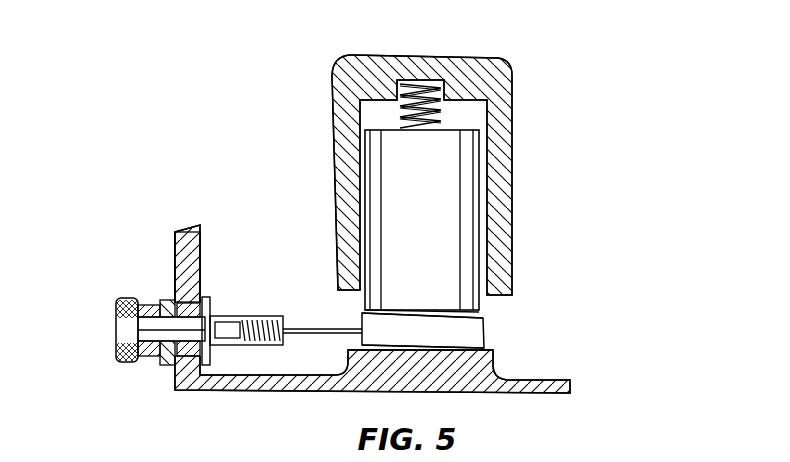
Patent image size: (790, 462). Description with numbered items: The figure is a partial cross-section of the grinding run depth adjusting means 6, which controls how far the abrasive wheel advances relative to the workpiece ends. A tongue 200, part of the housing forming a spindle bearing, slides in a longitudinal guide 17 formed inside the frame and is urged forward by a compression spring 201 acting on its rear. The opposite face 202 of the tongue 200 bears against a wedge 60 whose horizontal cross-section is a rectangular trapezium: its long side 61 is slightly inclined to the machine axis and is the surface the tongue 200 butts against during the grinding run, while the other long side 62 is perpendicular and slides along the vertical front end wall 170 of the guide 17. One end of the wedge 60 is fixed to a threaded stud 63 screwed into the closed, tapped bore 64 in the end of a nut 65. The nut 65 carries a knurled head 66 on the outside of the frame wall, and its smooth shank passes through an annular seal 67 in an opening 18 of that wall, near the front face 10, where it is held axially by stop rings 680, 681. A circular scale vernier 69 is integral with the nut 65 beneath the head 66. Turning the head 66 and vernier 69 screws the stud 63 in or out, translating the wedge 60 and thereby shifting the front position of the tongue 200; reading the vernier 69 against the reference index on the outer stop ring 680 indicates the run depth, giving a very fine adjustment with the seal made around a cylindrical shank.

The grinding run depth adjusting means 6 is at (246, 252).
The front face 10 is at (572, 387).
The longitudinal guide 17 is at (514, 183).
The opening 18 is at (177, 365).
The wedge 60 is at (460, 330).
The long side 61 is at (484, 317).
The other long side 62 is at (484, 348).
The threaded stud 63 is at (332, 337).
The tapped bore 64 is at (235, 332).
The nut 65 is at (150, 330).
The knurled head 66 is at (120, 322).
The annular seal 67 is at (200, 297).
The circular scale vernier 69 is at (150, 302).
The vertical front end wall 170 is at (494, 352).
The tongue 200 is at (412, 222).
The compression spring 201 is at (437, 118).
The face 202 is at (364, 310).
The outer stop ring 680 is at (172, 298).
The stop ring 681 is at (208, 303).